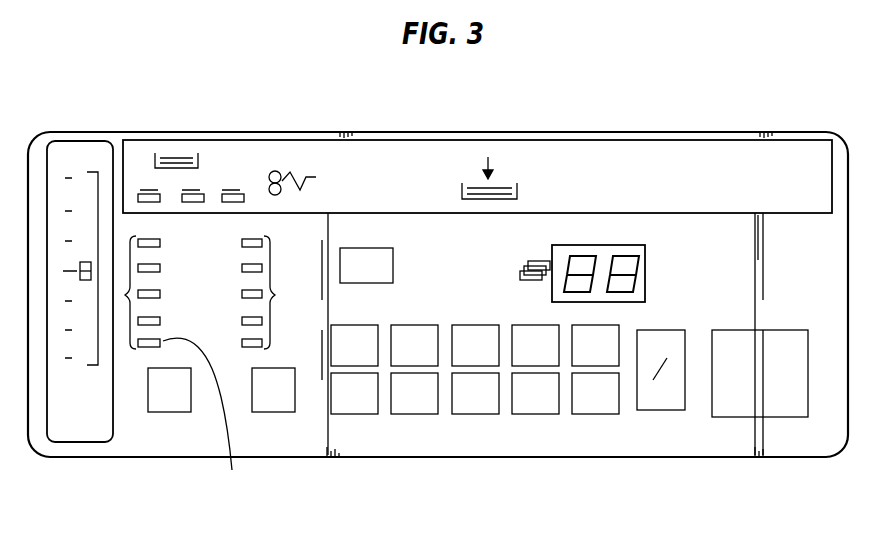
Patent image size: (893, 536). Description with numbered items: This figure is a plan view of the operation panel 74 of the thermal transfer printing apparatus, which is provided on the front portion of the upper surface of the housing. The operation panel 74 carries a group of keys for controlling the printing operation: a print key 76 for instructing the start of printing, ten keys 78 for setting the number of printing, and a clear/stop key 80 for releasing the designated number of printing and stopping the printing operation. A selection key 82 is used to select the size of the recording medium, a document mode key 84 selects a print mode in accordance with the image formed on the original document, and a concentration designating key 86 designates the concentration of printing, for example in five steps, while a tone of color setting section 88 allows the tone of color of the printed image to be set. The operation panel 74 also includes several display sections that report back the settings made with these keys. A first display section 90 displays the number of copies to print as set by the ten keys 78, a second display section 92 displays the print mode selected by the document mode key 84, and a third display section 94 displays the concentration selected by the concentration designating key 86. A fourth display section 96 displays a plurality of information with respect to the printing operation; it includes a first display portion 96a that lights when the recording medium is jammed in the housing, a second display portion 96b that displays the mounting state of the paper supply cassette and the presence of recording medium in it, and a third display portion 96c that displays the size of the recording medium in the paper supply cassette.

The operation panel 74 is at (680, 115).
The print key 76 is at (797, 330).
The ten keys 78 is at (621, 420).
The clear/stop key 80 is at (660, 330).
The selection key 82 is at (350, 248).
The document mode key 84 is at (160, 412).
The concentration designating key 86 is at (268, 412).
The tone of color setting section 88 is at (86, 443).
The first display section 90 is at (648, 233).
The second display section 92 is at (205, 376).
The third display section 94 is at (281, 294).
The fourth display section 96 is at (375, 152).
The first display portion 96a is at (270, 170).
The second display portion 96b is at (498, 156).
The third display portion 96c is at (174, 152).